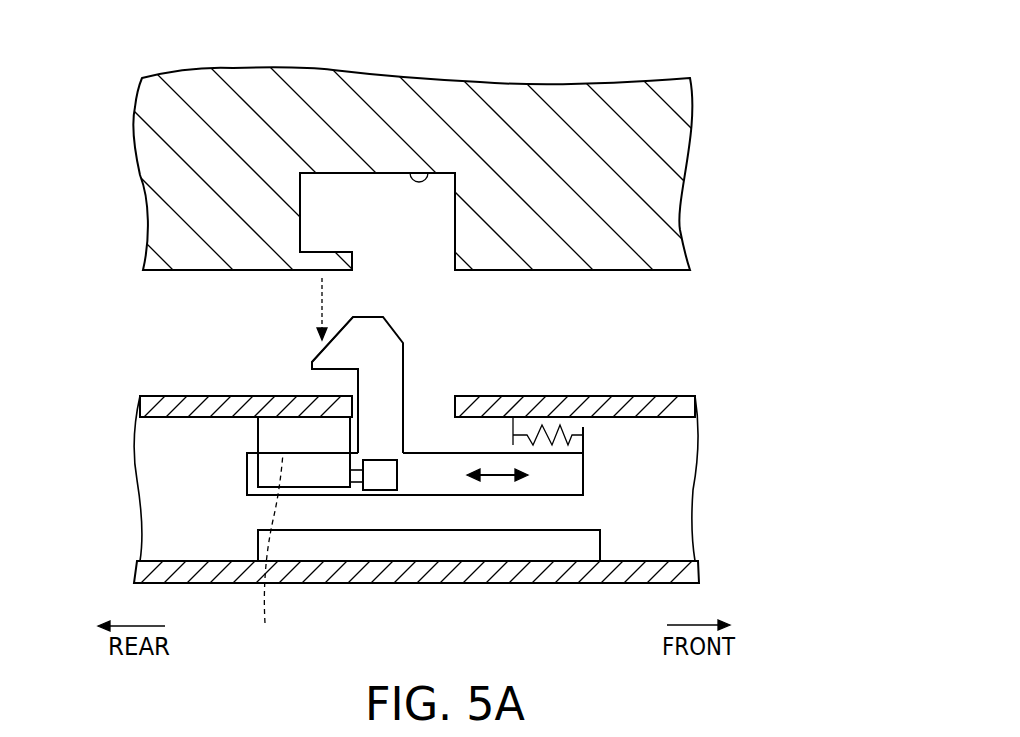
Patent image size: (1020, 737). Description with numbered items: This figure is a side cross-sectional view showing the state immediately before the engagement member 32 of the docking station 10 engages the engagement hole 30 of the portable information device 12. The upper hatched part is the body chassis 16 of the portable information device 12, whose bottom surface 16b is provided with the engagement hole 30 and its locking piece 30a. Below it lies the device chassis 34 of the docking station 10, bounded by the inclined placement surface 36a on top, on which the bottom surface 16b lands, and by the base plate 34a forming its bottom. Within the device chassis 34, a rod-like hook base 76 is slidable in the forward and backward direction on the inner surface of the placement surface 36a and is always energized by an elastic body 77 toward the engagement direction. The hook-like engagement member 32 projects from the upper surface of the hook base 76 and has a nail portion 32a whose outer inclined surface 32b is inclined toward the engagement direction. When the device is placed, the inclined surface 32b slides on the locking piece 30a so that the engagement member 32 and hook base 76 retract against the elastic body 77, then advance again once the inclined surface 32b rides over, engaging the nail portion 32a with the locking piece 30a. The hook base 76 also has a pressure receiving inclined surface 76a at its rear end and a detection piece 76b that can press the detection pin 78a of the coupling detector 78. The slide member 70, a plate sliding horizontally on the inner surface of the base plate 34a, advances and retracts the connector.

The docking station 10 is at (439, 469).
The portable information device 12 is at (421, 164).
The body chassis 16 is at (670, 147).
The bottom surface 16b is at (637, 272).
The engagement hole 30 is at (427, 173).
The locking piece 30a is at (335, 262).
The engagement member 32 is at (327, 365).
The nail portion 32a is at (312, 368).
The inclined surface 32b is at (318, 352).
The device chassis 34 is at (493, 472).
The base plate 34a is at (692, 568).
The placement surface 36a is at (627, 397).
The slide member 70 is at (463, 550).
The hook base 76 is at (415, 544).
The pressure receiving inclined surface 76a is at (267, 557).
The detection piece 76b is at (380, 478).
The elastic body 77 is at (563, 420).
The coupling detector 78 is at (214, 536).
The detection pin 78a is at (357, 482).